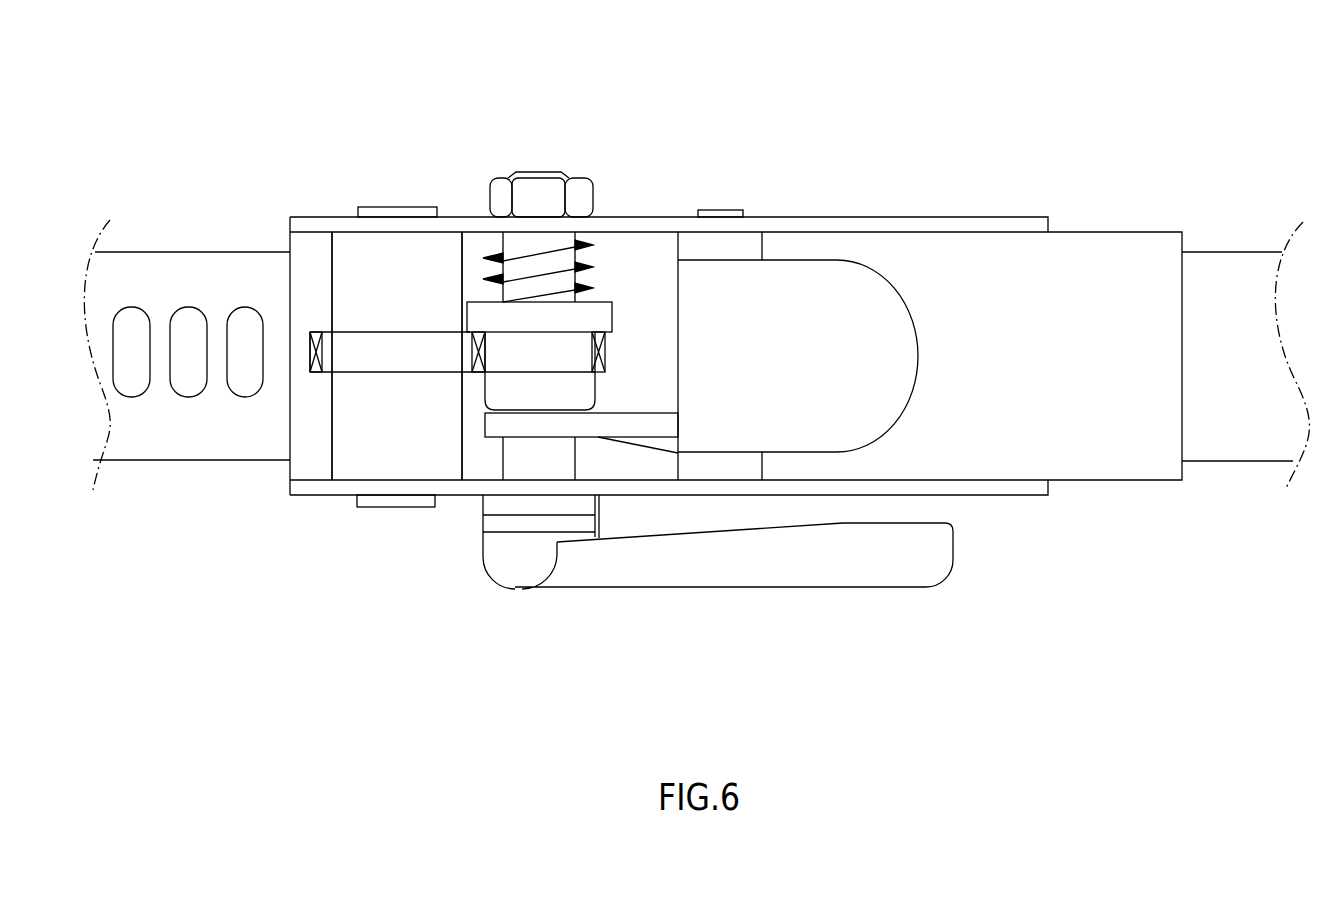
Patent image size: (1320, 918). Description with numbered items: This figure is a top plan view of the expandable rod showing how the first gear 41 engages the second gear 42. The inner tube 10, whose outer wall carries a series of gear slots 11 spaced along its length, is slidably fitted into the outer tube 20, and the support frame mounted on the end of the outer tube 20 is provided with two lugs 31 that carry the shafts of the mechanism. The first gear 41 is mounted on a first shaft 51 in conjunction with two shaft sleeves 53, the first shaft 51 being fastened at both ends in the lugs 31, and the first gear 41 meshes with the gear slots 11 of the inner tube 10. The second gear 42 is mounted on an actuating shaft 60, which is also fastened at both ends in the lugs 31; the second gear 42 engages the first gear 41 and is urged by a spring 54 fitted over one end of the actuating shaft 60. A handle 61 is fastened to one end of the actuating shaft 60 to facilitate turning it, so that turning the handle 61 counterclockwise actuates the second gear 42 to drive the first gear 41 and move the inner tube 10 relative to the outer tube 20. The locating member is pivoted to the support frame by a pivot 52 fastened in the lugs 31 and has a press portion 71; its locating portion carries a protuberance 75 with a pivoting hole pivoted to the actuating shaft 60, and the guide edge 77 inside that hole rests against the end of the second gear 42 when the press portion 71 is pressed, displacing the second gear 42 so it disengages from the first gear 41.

The inner tube 10 is at (175, 262).
The gear slots 11 is at (193, 322).
The outer tube 20 is at (1238, 462).
The lugs 31 is at (983, 228).
The first gear 41 is at (405, 342).
The second gear 42 is at (605, 348).
The first shaft 51 is at (390, 508).
The pivot 52 is at (718, 208).
The shaft sleeves 53 is at (343, 250).
The spring 54 is at (592, 242).
The actuating shaft 60 is at (510, 455).
The handle 61 is at (865, 578).
The press portion 71 is at (848, 278).
The protuberance 75 is at (590, 425).
The guide edge 77 is at (593, 385).